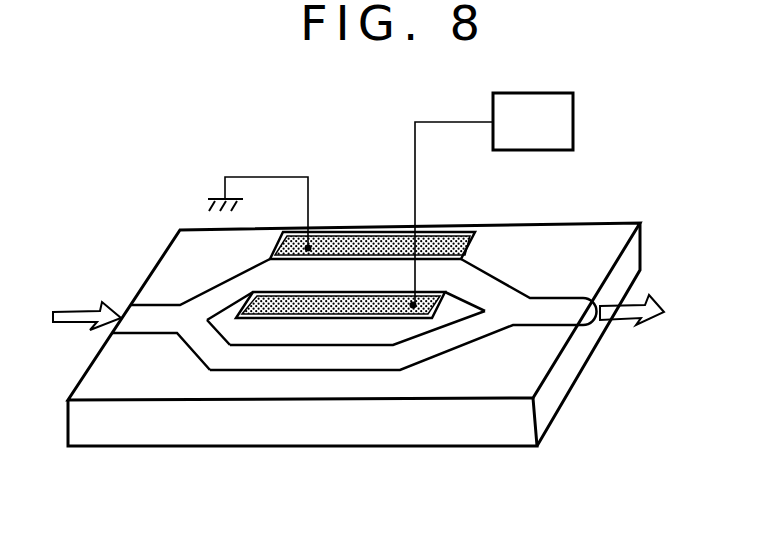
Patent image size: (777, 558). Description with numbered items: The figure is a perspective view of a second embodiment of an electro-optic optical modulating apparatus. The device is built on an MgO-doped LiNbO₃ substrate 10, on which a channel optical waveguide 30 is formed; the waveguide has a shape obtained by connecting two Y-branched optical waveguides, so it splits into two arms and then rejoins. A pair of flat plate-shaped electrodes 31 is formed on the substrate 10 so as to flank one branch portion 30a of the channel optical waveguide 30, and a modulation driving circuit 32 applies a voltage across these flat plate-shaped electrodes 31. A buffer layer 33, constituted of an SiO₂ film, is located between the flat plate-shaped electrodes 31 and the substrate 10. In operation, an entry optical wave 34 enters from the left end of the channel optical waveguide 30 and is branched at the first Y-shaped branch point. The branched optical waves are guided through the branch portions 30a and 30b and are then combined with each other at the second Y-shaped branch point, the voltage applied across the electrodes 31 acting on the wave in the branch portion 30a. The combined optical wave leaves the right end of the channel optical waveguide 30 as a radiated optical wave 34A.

The MgO-doped LiNbO₃ substrate 10 is at (108, 377).
The channel optical waveguide 30 is at (347, 335).
The branch portion 30a is at (350, 278).
The branch portion 30b is at (367, 357).
The flat plate-shaped electrode 31 is at (468, 247).
The modulation driving circuit 32 is at (560, 135).
The buffer layer 33 is at (243, 308).
The entry optical wave 34 is at (80, 311).
The radiated optical wave 34A is at (645, 295).